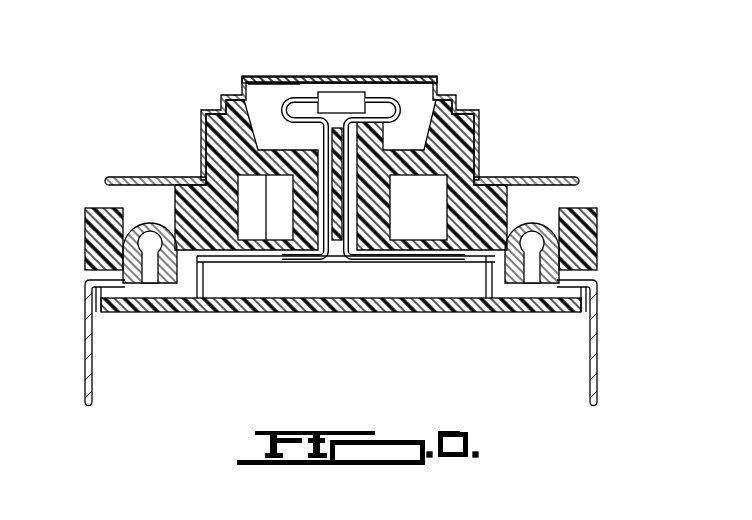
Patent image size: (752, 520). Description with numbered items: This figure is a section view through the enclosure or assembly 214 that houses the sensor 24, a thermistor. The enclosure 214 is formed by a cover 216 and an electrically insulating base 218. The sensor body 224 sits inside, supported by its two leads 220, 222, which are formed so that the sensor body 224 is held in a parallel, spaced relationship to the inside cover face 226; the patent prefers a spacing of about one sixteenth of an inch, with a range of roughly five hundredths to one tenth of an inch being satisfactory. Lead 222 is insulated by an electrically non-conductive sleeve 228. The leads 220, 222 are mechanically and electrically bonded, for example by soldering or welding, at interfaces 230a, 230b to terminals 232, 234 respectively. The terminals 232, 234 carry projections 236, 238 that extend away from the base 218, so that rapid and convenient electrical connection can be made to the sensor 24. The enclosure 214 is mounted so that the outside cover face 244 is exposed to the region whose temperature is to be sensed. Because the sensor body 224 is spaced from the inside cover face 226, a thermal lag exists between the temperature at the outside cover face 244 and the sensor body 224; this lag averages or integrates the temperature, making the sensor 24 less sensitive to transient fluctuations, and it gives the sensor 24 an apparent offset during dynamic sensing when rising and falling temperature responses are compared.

The sensor 24 is at (300, 90).
The enclosure 214 is at (518, 150).
The cover 216 is at (205, 125).
The base 218 is at (96, 209).
The lead 220 is at (245, 300).
The lead 222 is at (347, 262).
The sensor body 224 is at (383, 80).
The inside cover face 226 is at (355, 77).
The electrically non-conductive sleeve 228 is at (326, 264).
The interface 230a is at (238, 245).
The interface 230b is at (412, 248).
The terminal 232 is at (195, 270).
The terminal 234 is at (472, 262).
The projection 236 is at (92, 388).
The projection 238 is at (585, 383).
The outside cover face 244 is at (283, 77).